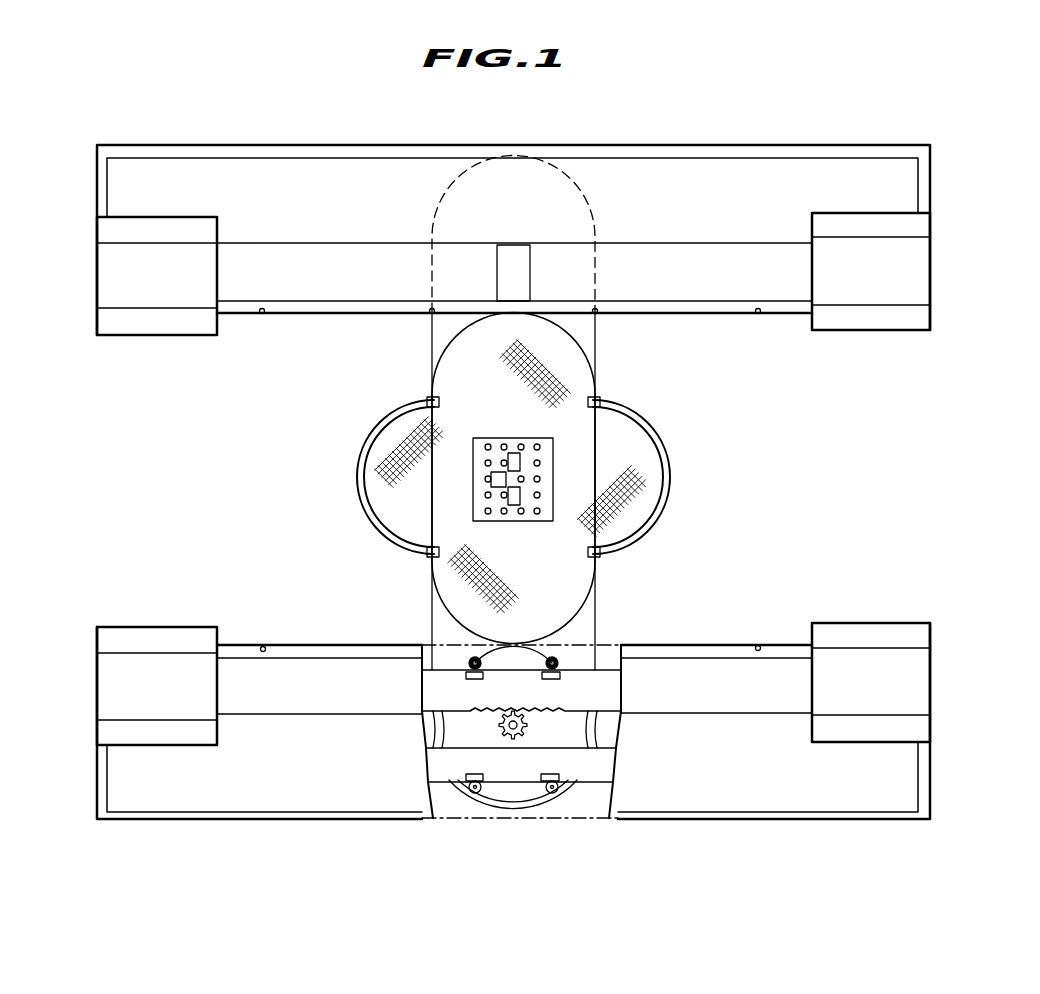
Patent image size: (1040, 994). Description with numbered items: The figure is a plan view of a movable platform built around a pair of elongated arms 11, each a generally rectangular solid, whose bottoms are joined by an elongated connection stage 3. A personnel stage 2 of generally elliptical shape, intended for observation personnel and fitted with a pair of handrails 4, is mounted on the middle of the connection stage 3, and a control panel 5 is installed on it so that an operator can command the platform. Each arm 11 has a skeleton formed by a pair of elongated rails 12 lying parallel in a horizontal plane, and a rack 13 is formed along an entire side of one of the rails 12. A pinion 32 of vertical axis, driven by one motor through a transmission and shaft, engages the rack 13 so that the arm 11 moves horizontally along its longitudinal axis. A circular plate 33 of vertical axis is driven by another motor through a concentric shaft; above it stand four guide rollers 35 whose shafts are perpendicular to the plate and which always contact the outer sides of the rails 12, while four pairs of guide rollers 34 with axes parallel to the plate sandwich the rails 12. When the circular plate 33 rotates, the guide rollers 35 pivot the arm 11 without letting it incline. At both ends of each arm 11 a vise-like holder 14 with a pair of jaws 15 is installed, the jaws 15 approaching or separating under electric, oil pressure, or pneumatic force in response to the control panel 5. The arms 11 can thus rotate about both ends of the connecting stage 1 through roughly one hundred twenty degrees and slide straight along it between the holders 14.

The connecting stage 1 is at (545, 492).
The personnel stage 2 is at (565, 585).
The connection stage 3 is at (590, 197).
The ring holder 4 is at (662, 504).
The control panel 5 is at (540, 480).
The arm 11 is at (890, 145).
The rail 12 is at (442, 693).
The rack 13 is at (537, 713).
The holder 14 is at (117, 273).
The jaw 15 is at (115, 230).
The pinion 32 is at (513, 740).
The circular plate 33 is at (573, 722).
The guide roller 34 is at (466, 673).
The guide roller 35 is at (473, 660).